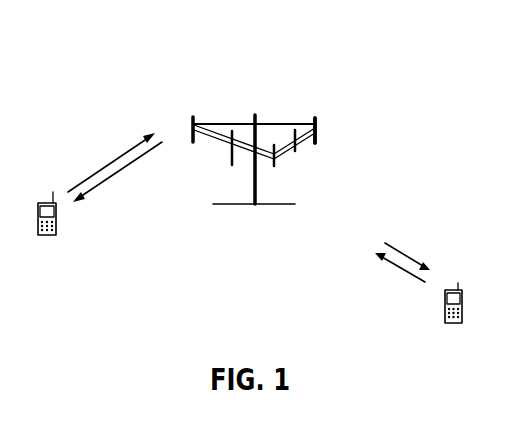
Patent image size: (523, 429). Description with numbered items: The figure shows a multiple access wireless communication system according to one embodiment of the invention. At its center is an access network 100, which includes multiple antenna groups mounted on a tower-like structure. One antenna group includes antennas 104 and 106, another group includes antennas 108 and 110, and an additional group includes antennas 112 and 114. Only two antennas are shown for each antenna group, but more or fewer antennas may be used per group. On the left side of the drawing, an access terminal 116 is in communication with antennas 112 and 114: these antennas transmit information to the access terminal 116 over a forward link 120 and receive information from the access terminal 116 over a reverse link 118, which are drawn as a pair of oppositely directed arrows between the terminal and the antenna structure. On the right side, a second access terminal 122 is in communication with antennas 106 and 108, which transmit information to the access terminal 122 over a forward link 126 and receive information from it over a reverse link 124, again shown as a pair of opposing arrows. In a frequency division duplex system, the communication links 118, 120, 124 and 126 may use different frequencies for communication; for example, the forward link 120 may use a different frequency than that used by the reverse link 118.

The access network 100 is at (243, 204).
The antenna 104 is at (274, 166).
The antenna 106 is at (295, 150).
The antenna 108 is at (316, 135).
The antenna 110 is at (255, 115).
The antenna 112 is at (194, 124).
The antenna 114 is at (232, 165).
The access terminal 116 is at (45, 202).
The reverse link 118 is at (107, 164).
The forward link 120 is at (122, 170).
The access terminal 122 is at (452, 290).
The reverse link 124 is at (394, 264).
The forward link 126 is at (410, 258).